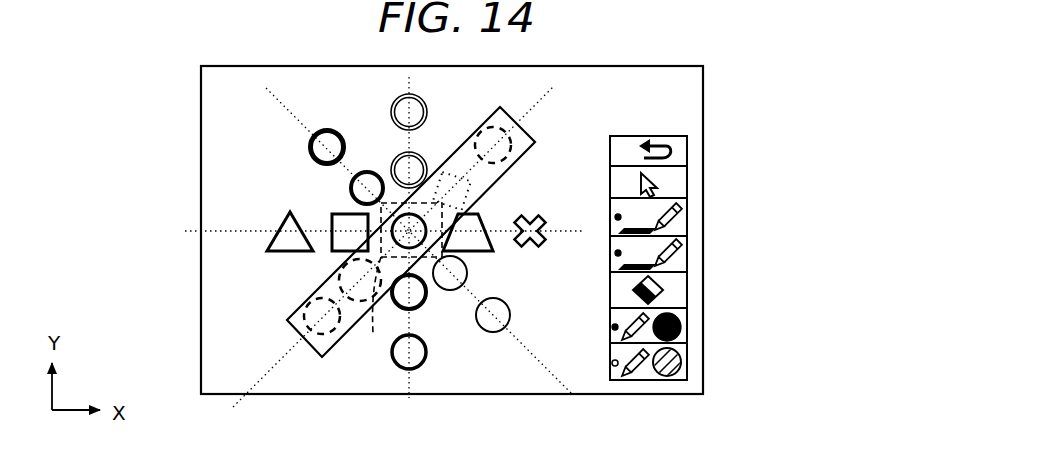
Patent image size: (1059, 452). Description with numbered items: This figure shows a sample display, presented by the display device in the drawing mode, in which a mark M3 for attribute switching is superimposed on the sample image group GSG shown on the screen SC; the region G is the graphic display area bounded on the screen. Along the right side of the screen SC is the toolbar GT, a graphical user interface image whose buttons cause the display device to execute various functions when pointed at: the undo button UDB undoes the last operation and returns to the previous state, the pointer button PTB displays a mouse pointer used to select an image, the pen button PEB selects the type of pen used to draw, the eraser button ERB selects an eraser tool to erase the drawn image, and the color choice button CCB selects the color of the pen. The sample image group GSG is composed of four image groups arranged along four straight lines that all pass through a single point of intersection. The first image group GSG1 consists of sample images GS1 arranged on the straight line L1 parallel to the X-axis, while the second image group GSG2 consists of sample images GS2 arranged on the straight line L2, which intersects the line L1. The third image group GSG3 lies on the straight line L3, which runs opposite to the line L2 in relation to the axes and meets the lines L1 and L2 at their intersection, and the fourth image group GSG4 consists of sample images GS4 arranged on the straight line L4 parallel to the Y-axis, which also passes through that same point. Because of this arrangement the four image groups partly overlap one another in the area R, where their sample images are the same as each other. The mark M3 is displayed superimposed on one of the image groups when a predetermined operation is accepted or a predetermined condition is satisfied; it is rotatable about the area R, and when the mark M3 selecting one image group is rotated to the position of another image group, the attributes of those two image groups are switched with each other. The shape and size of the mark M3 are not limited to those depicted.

The screen SC is at (688, 104).
The graphic display area G is at (705, 116).
The toolbar GT is at (648, 133).
The undo button UDB is at (687, 150).
The pointer button PTB is at (687, 184).
The pen button PEB is at (687, 254).
The eraser button ERB is at (687, 290).
The color choice button CCB is at (687, 326).
The sample image group GSG is at (451, 127).
The first image group GSG1 is at (571, 192).
The second image group GSG2 is at (515, 144).
The third image group GSG3 is at (302, 142).
The fourth image group GSG4 is at (401, 95).
The sample image GS1 is at (289, 211).
The sample image GS2 is at (309, 297).
The sample image GS4 is at (428, 353).
The mark M3 is at (518, 163).
The area R is at (405, 281).
The straight line L1 is at (366, 232).
The straight line L2 is at (385, 259).
The straight line L3 is at (433, 260).
The straight line L4 is at (411, 255).